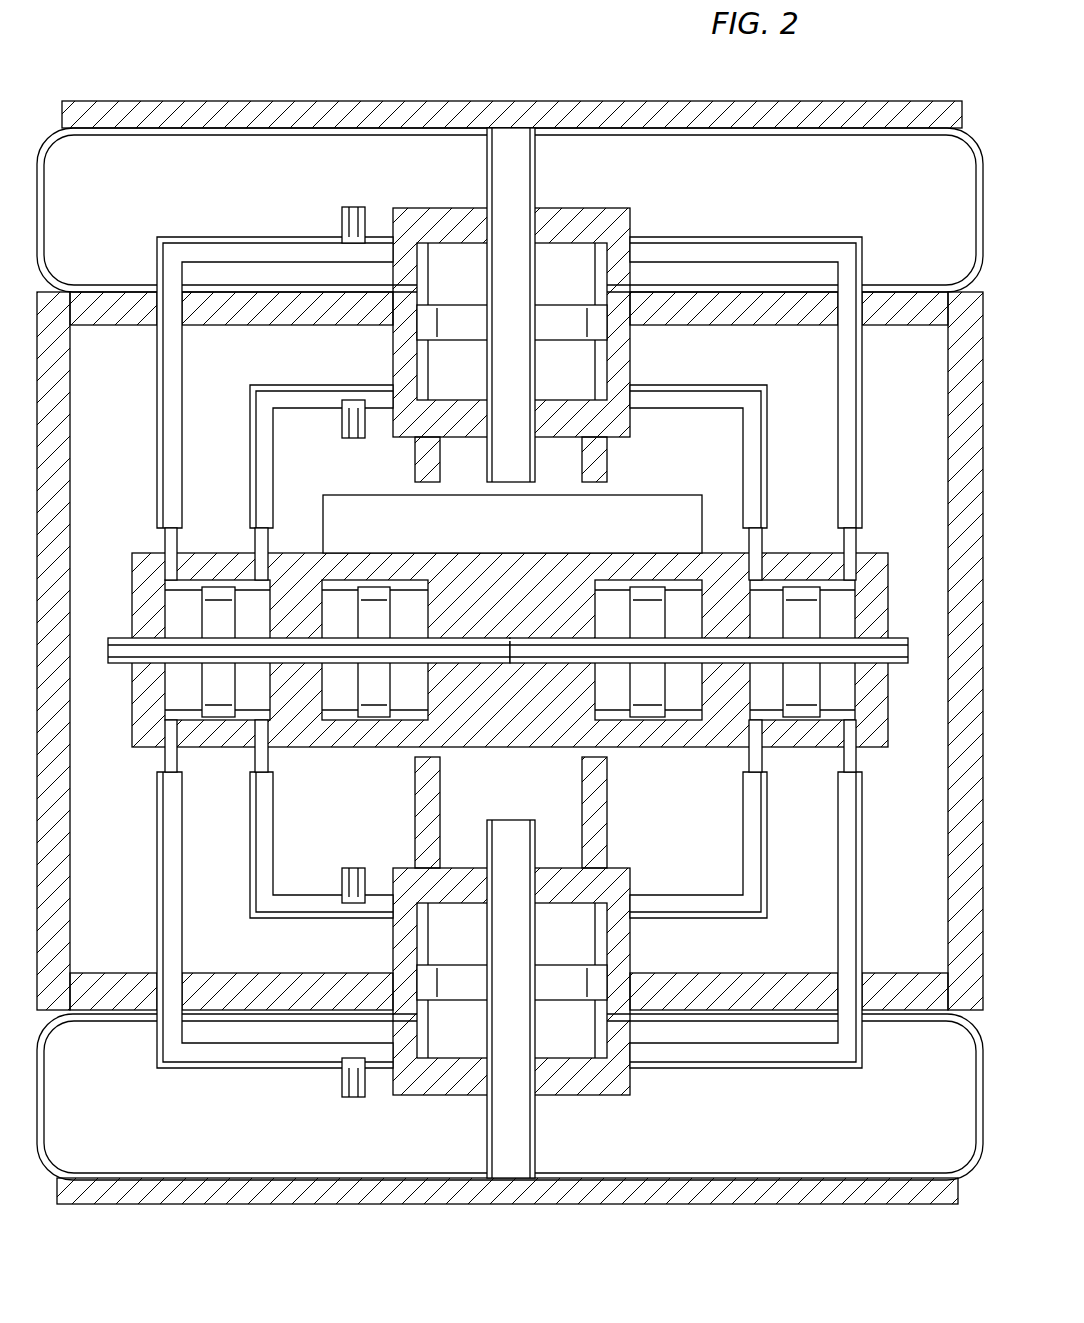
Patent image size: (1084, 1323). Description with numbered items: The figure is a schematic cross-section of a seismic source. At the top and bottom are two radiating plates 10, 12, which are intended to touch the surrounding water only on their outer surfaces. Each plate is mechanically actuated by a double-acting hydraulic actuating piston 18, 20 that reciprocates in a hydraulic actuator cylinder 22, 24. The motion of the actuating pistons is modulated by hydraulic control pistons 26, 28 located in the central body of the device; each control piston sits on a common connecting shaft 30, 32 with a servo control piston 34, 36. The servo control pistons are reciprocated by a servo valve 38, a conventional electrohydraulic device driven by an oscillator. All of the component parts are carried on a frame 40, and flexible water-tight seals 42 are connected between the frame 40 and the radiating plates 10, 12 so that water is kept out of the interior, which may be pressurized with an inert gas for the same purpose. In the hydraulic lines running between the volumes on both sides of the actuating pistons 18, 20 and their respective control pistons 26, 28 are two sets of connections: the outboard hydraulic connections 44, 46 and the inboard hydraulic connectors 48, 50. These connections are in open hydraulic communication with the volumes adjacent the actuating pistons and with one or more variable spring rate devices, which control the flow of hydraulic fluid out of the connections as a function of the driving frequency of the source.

The radiating plate 10 is at (356, 1205).
The radiating plate 12 is at (250, 101).
The hydraulic actuating piston 18 is at (570, 990).
The hydraulic actuating piston 20 is at (578, 305).
The hydraulic actuator cylinder 22 is at (628, 870).
The hydraulic actuator cylinder 24 is at (630, 214).
The hydraulic control piston 26 is at (217, 710).
The hydraulic control piston 28 is at (803, 708).
The connecting shaft 30 is at (302, 652).
The connecting shaft 32 is at (728, 652).
The servo control piston 34 is at (378, 712).
The servo control piston 36 is at (648, 710).
The servo valve 38 is at (665, 505).
The frame 40 is at (70, 483).
The flexible water-tight seal 42 is at (45, 202).
The outboard hydraulic connection 44 is at (351, 1099).
The outboard hydraulic connection 46 is at (352, 207).
The inboard hydraulic connector 48 is at (352, 438).
The inboard hydraulic connector 50 is at (352, 868).